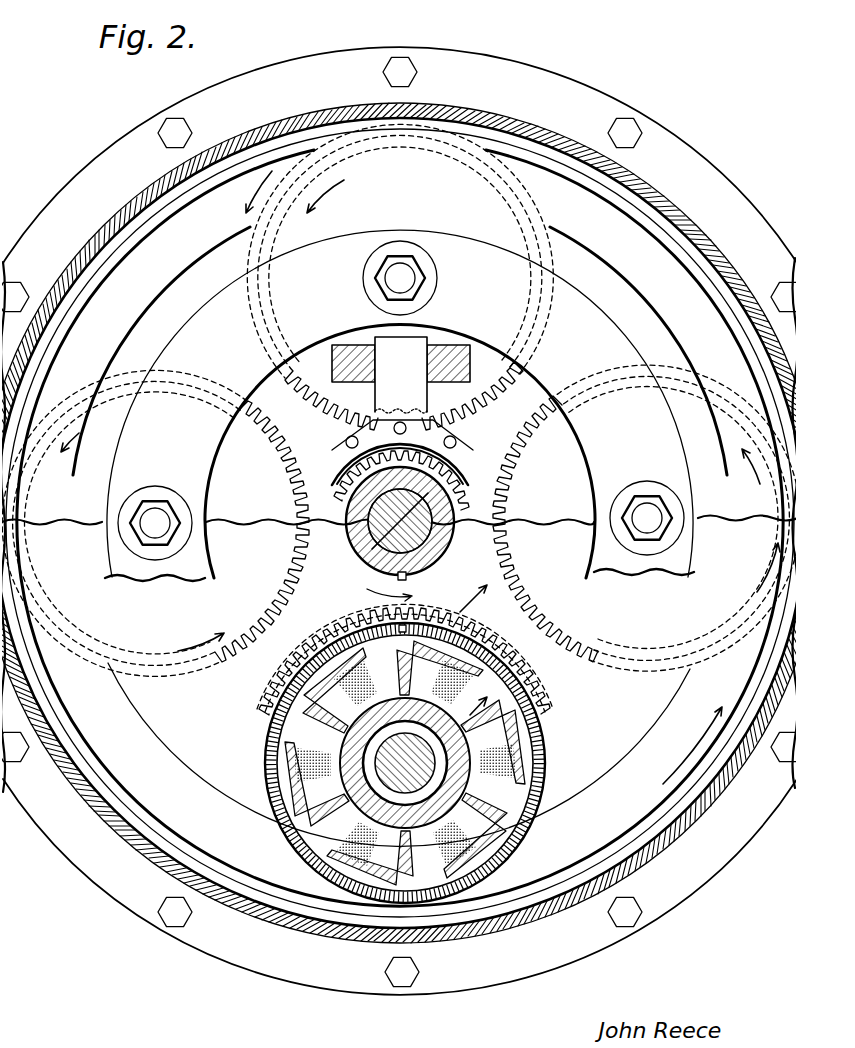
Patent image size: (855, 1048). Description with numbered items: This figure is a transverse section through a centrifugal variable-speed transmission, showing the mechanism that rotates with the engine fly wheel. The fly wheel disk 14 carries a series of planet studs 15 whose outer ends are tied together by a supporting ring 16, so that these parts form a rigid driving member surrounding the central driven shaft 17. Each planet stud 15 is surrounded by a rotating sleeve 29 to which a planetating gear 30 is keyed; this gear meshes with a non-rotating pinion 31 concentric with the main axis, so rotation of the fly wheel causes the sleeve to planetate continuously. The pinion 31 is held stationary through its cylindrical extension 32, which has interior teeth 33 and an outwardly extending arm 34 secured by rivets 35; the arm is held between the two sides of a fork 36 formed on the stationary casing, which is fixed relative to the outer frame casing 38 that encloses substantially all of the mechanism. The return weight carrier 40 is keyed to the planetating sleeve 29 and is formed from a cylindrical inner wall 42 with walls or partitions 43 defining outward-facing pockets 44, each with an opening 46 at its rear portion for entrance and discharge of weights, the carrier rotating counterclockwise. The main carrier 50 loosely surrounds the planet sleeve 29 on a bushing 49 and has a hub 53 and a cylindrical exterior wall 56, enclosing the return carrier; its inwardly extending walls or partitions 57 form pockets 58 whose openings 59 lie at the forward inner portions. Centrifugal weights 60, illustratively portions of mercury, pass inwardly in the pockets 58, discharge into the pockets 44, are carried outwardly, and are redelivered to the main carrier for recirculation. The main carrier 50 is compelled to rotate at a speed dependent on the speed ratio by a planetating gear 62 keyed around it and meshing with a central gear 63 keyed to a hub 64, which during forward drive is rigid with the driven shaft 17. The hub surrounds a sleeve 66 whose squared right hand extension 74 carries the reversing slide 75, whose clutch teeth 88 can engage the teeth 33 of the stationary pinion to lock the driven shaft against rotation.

The fly wheel disk 14 is at (676, 754).
The planet studs 15 is at (150, 524).
The supporting ring 16 is at (400, 405).
The driven shaft 17 is at (387, 543).
The rotating sleeve 29 is at (480, 747).
The planetating gear 30 is at (401, 400).
The non-rotating pinion 31 is at (303, 468).
The cylindrical extension 32 is at (460, 477).
The teeth 33 is at (467, 512).
The outwardly extending arm 34 is at (401, 375).
The rivets 35 is at (367, 438).
The fork 36 is at (400, 331).
The outer frame casing 38 is at (717, 803).
The return weight carrier 40 is at (487, 720).
The cylindrical inner wall 42 is at (290, 735).
The walls or partitions 43 is at (405, 659).
The pockets 44 is at (475, 672).
The opening 46 is at (460, 770).
The bushing 49 is at (490, 782).
The main carrier 50 is at (222, 743).
The hub 53 is at (335, 866).
The cylindrical exterior wall 56 is at (460, 660).
The inwardly extending walls or partitions 57 is at (293, 847).
The pockets 58 is at (290, 710).
The openings 59 is at (317, 873).
The centrifugal weights 60 is at (393, 888).
The planetating gear 62 is at (336, 640).
The central gear 63 is at (480, 570).
The hub 64 is at (410, 575).
The sleeve 66 is at (385, 545).
The right hand extension 74 is at (347, 477).
The reversing slide 75 is at (353, 500).
The clutch teeth 88 is at (337, 507).